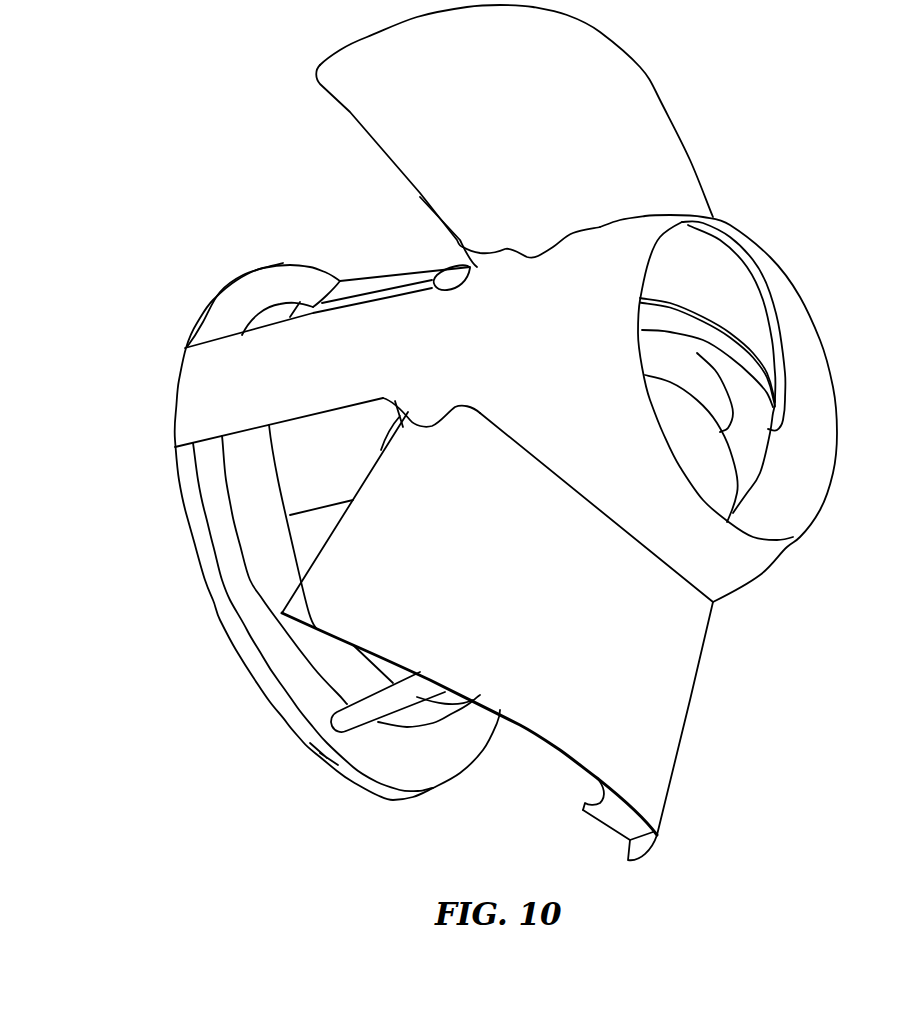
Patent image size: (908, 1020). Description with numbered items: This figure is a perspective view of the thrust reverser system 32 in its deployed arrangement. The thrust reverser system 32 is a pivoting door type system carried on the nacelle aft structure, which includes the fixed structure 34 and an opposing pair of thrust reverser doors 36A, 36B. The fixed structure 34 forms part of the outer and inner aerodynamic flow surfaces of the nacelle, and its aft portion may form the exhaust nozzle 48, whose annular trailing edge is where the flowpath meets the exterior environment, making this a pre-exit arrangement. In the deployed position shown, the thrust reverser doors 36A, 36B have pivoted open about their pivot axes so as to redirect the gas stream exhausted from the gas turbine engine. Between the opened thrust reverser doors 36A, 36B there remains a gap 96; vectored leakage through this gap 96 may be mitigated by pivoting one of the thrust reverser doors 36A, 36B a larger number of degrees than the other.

The thrust reverser system 32 is at (163, 133).
The fixed structure 34 is at (177, 393).
The thrust reverser door 36A is at (667, 113).
The thrust reverser door 36B is at (690, 712).
The exhaust nozzle 48 is at (790, 315).
The gap 96 is at (740, 382).